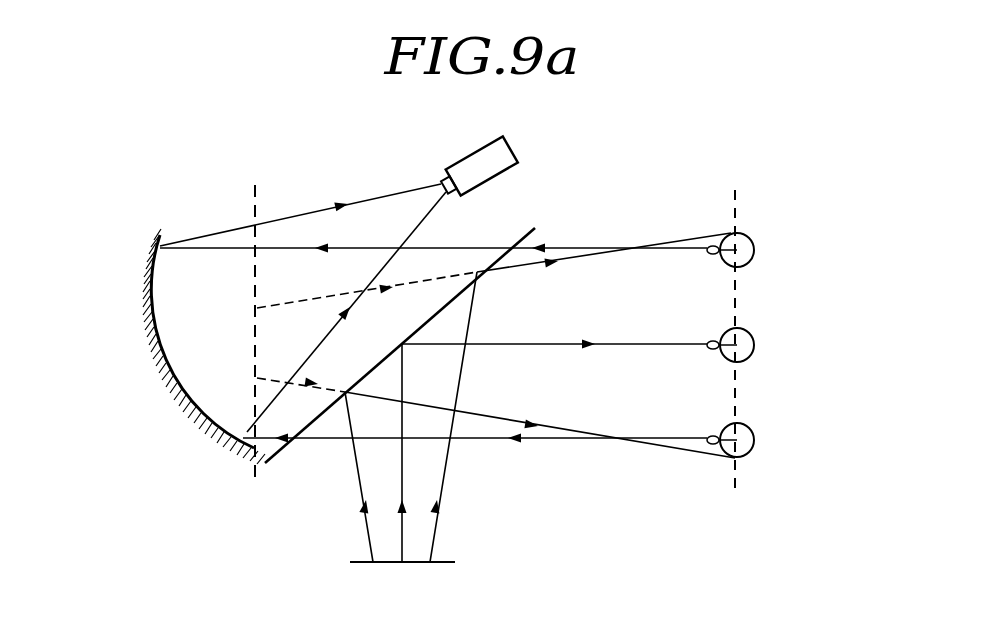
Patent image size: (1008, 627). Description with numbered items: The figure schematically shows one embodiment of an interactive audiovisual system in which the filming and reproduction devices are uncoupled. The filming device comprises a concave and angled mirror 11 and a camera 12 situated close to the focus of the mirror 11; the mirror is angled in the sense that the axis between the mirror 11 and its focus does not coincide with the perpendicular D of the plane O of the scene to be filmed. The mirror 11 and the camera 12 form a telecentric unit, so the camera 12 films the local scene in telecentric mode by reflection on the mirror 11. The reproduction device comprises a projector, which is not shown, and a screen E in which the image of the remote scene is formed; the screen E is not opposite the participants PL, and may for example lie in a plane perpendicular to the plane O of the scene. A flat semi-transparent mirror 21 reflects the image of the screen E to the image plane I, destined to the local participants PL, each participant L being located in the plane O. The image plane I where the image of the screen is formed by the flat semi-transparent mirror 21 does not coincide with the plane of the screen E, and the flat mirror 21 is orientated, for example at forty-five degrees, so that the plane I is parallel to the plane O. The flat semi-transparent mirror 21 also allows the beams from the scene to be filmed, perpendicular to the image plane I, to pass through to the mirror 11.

The concave and angled mirror 11 is at (150, 281).
The camera 12 is at (478, 170).
The flat semi-transparent mirror 21 is at (519, 233).
The image plane I is at (255, 358).
The perpendicular LD D is at (415, 453).
The screen E is at (411, 425).
The plane of the scene to be filmed O is at (735, 325).
The local participant L is at (727, 358).
The participants PL is at (772, 345).